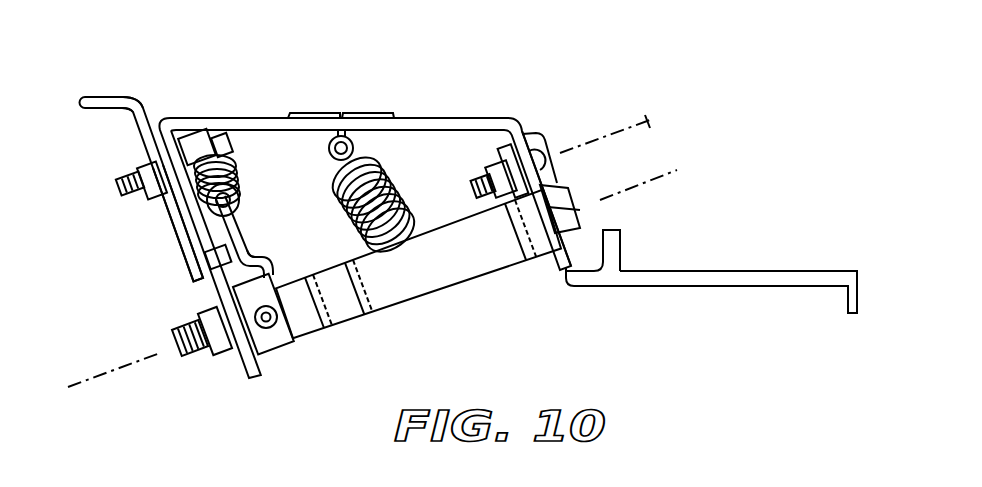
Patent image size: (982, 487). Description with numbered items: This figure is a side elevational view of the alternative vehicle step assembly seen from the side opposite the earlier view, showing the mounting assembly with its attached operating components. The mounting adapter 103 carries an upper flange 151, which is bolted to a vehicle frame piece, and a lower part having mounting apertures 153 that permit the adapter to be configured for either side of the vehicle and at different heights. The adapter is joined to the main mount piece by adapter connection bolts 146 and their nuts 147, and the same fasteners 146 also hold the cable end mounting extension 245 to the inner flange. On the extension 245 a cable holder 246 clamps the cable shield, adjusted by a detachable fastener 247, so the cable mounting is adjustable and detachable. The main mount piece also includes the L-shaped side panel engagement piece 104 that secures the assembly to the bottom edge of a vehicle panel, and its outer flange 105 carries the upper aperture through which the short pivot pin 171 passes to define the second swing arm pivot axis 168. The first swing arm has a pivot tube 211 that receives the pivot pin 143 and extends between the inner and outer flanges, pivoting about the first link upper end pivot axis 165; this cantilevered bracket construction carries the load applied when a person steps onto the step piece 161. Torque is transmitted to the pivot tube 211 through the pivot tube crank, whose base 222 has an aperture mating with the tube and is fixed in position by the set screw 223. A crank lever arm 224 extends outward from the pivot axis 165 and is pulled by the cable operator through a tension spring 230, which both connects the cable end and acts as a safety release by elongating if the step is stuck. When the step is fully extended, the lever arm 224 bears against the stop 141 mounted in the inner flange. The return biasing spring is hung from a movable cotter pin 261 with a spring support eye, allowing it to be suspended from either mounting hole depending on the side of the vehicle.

The mounting adapter 103 is at (130, 122).
The upper flange 151 is at (105, 96).
The mounting apertures 153 is at (163, 220).
The adapter connection bolts 146 is at (116, 183).
The nuts 147 is at (150, 197).
The cable end mounting extension 245 is at (165, 117).
The cable holder 246 is at (204, 133).
The detachable fastener 247 is at (236, 150).
The tension spring 230 is at (233, 176).
The crank lever arm 224 is at (236, 227).
The stop 141 is at (262, 243).
The cotter pin 261 is at (367, 112).
The pivot pin 171 is at (553, 177).
The second swing arm pivot axis 168 is at (642, 120).
The outer flange 105 is at (550, 181).
The pivot pin 143 is at (563, 212).
The side panel engagement piece 104 is at (608, 250).
The step piece 161 is at (727, 277).
The pivot tube 211 is at (443, 257).
The pivot tube crank set screw 223 is at (282, 340).
The pivot tube crank base 222 is at (265, 343).
The first link upper end pivot axis 165 is at (82, 385).